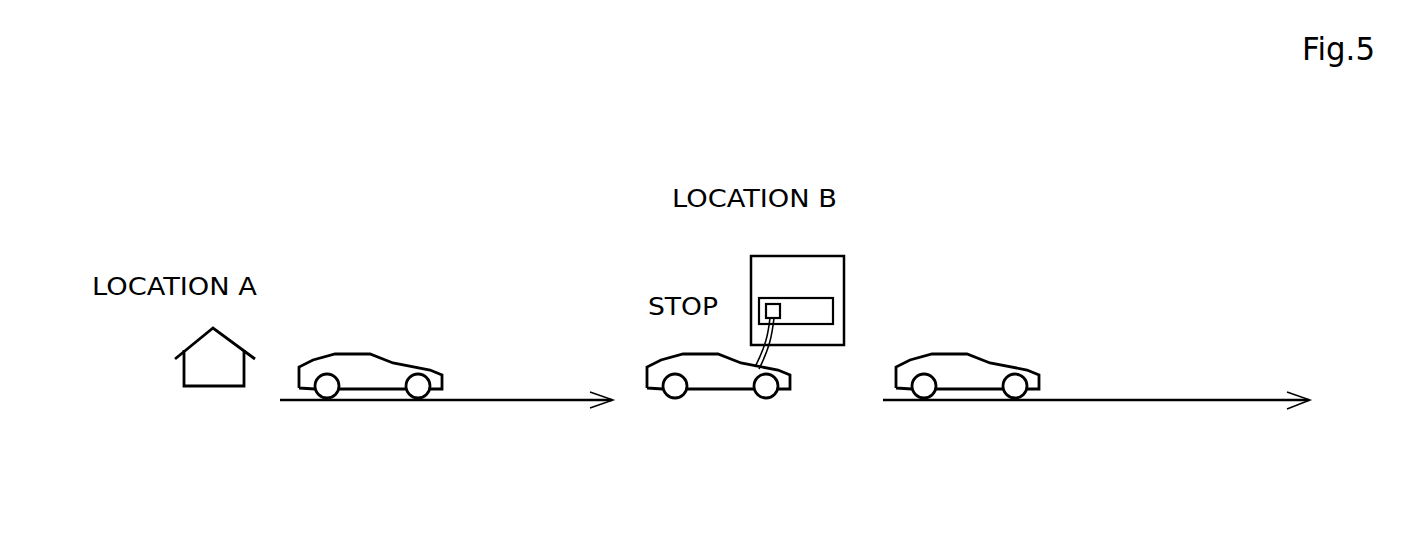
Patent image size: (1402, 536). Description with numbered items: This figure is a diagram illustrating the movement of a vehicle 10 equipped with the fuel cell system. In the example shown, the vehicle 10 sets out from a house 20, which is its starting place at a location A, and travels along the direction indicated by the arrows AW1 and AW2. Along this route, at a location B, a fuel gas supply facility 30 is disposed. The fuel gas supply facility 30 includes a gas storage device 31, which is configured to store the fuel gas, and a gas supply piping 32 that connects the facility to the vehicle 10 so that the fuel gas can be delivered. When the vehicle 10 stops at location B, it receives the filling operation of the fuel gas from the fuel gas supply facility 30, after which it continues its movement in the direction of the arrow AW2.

The vehicle 10 is at (362, 353).
The house 20 is at (232, 342).
The fuel gas supply facility 30 is at (805, 256).
The gas storage device 31 is at (793, 298).
The gas supply piping 32 is at (775, 366).
The arrow AW1 is at (437, 401).
The arrow AW2 is at (1162, 402).